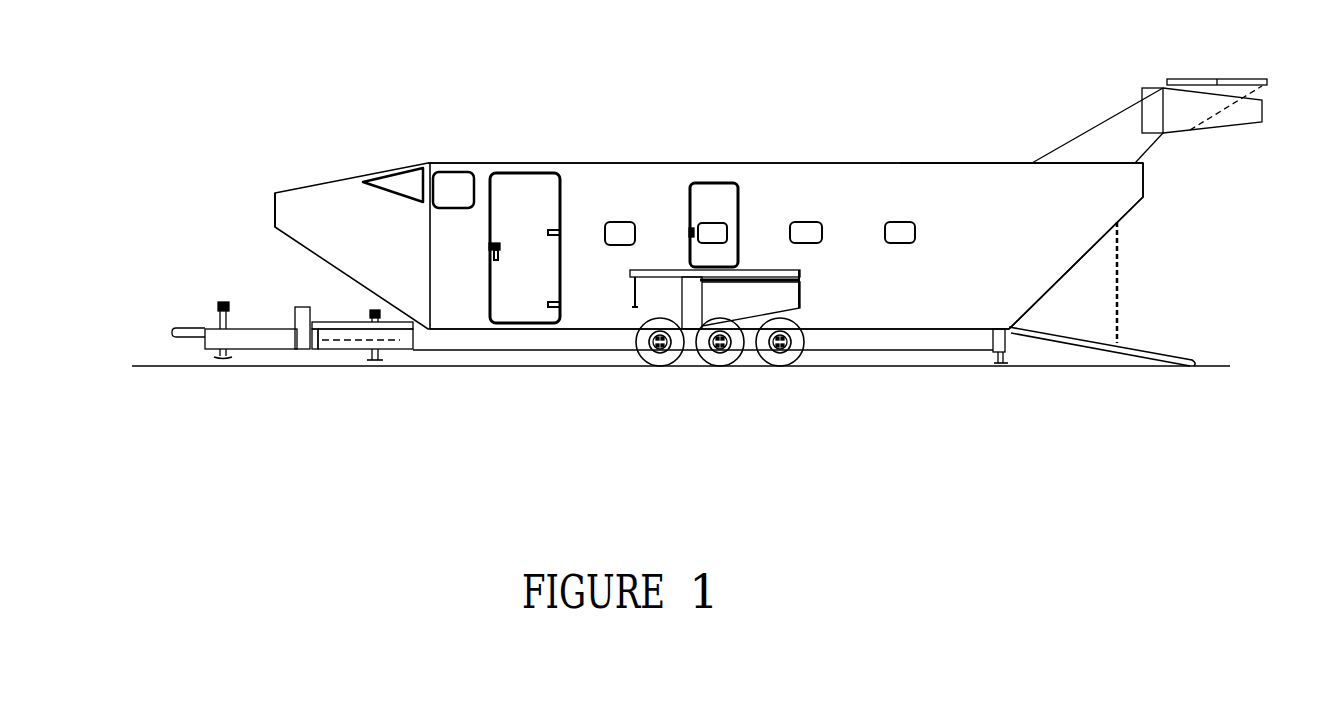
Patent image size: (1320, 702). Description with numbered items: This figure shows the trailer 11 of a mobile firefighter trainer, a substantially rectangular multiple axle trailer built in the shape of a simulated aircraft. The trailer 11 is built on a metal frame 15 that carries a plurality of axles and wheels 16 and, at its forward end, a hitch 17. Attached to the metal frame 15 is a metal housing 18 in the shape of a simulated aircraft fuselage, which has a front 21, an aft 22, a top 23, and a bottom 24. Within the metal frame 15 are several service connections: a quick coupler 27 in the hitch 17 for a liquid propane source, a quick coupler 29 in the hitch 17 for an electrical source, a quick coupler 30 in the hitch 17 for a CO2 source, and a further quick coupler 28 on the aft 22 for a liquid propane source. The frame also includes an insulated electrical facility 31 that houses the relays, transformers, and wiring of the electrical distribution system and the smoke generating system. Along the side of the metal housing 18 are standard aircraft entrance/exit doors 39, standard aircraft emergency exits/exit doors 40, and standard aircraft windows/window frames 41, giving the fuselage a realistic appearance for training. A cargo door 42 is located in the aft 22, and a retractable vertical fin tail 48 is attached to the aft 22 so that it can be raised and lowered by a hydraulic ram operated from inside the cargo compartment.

The trailer 11 is at (247, 248).
The metal frame 15 is at (435, 342).
The axles and wheels 16 is at (668, 357).
The hitch 17 is at (172, 328).
The metal housing 18 is at (973, 173).
The front 21 is at (275, 198).
The aft 22 is at (1143, 190).
The top 23 is at (805, 158).
The bottom 24 is at (492, 330).
The quick coupler 27 is at (298, 343).
The quick coupler 28 is at (1002, 340).
The quick coupler 29 is at (292, 308).
The quick coupler 30 is at (315, 343).
The insulated electrical facility 31 is at (393, 327).
The standard aircraft entrance/exit doors 39 is at (523, 195).
The standard aircraft emergency exits/exit doors 40 is at (698, 195).
The standard aircraft windows/window frames 41 is at (622, 228).
The cargo door 42 is at (1083, 347).
The retractable vertical fin tail 48 is at (1100, 142).